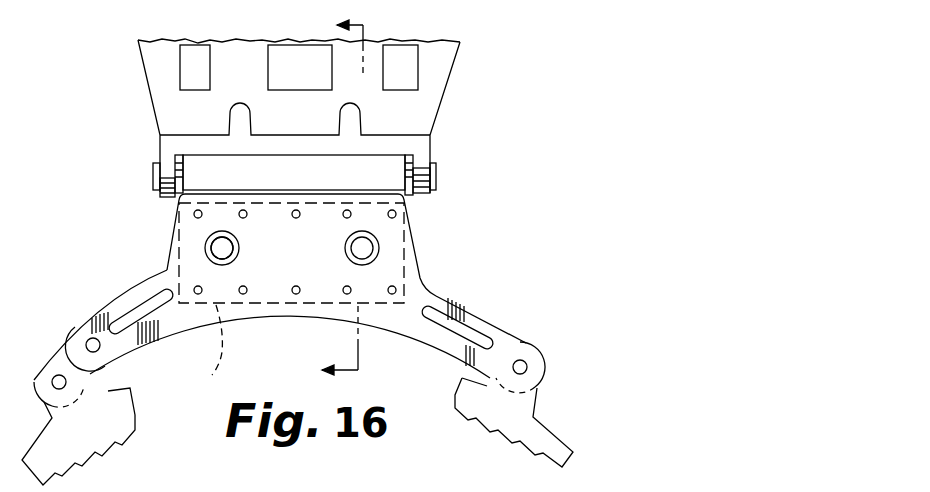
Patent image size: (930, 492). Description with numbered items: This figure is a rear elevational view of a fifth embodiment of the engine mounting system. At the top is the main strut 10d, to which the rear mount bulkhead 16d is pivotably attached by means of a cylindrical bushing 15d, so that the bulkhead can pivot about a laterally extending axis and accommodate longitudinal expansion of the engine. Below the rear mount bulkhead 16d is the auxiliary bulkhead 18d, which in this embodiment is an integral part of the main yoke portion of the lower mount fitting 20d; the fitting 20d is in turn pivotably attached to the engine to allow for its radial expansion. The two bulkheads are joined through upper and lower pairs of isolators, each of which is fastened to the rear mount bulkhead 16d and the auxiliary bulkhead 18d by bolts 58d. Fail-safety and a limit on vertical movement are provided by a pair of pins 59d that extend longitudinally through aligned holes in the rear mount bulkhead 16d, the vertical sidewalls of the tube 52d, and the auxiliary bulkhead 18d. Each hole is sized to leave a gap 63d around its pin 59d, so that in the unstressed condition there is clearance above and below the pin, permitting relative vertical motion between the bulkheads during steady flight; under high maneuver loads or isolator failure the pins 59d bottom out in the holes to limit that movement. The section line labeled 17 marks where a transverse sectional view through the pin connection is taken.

The main strut 10d is at (443, 70).
The cylindrical bushing 15d is at (390, 157).
The rear mount bulkhead 16d is at (413, 198).
The section line for FIG. 17 is at (366, 194).
The auxiliary bulkhead 18d is at (417, 237).
The lower mount fitting 20d is at (512, 330).
The tube 52d is at (220, 372).
The bolts 58d is at (296, 218).
The pins 59d is at (222, 243).
The gap 63d is at (372, 255).